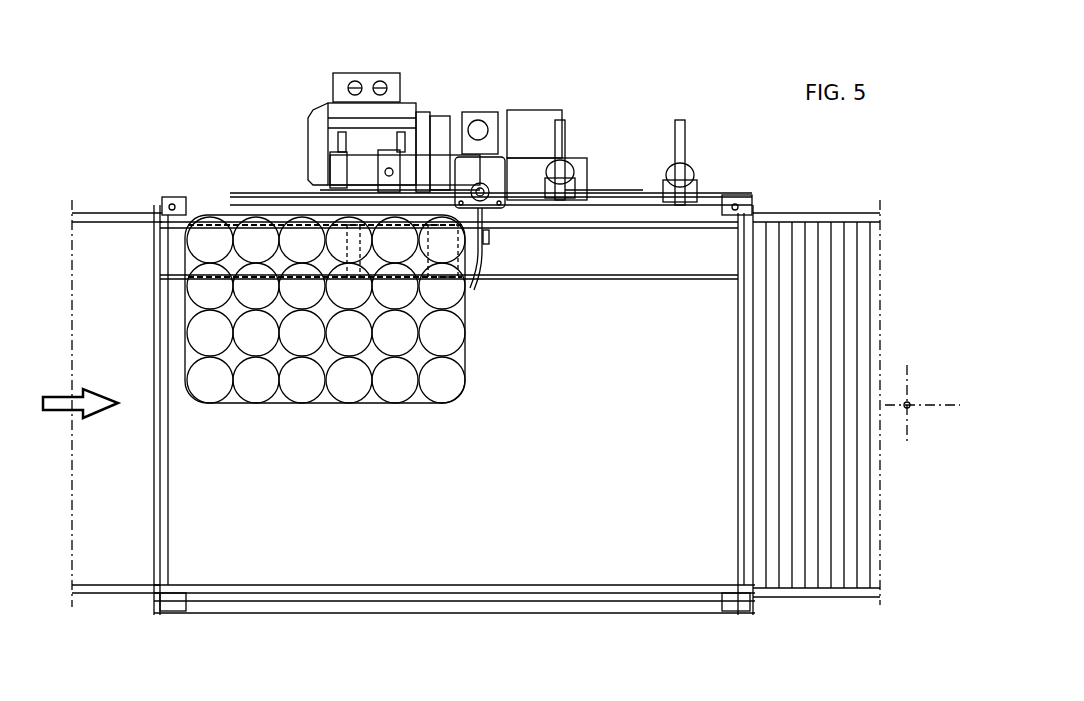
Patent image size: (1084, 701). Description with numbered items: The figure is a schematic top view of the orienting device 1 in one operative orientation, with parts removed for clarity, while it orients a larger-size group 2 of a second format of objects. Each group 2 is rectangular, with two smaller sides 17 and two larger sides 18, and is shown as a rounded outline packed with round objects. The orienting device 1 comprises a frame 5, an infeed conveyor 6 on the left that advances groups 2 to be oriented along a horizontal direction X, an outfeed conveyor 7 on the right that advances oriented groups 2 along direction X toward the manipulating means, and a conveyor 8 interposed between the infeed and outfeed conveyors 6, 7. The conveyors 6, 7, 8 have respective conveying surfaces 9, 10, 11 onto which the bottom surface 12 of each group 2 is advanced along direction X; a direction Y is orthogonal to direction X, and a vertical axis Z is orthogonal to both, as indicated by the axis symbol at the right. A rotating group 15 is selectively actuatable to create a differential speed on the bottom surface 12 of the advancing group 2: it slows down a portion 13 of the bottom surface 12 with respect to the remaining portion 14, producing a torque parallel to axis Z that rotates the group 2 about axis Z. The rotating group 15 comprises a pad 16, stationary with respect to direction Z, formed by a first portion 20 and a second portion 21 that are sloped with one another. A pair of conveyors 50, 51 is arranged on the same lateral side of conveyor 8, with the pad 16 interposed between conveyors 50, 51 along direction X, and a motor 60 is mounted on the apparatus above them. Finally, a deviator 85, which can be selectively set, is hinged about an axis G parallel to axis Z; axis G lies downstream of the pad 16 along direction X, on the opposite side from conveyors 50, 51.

The orienting device 1 is at (492, 350).
The group of objects 2 is at (329, 294).
The frame 5 is at (502, 120).
The infeed conveyor 6 is at (97, 240).
The outfeed conveyor 7 is at (847, 413).
The conveyor 8 is at (565, 515).
The conveying surface 9 is at (108, 540).
The conveying surface 10 is at (828, 520).
The conveying surface 11 is at (326, 522).
The bottom surface 12 is at (238, 213).
The portion of bottom surface 13 is at (410, 242).
The remaining portion of bottom surface 14 is at (212, 372).
The rotating group 15 is at (484, 253).
The pad 16 is at (420, 268).
The smaller side 17 is at (183, 318).
The larger side 18 is at (315, 408).
The first portion of pad 20 is at (368, 262).
The second portion of pad 21 is at (470, 258).
The conveyor 50 is at (690, 240).
The conveyor 51 is at (175, 252).
The motor 60 is at (390, 127).
The deviator 85 is at (489, 236).
The axis G is at (480, 190).
The direction X is at (937, 410).
The direction Y is at (907, 388).
The axis Z is at (905, 415).